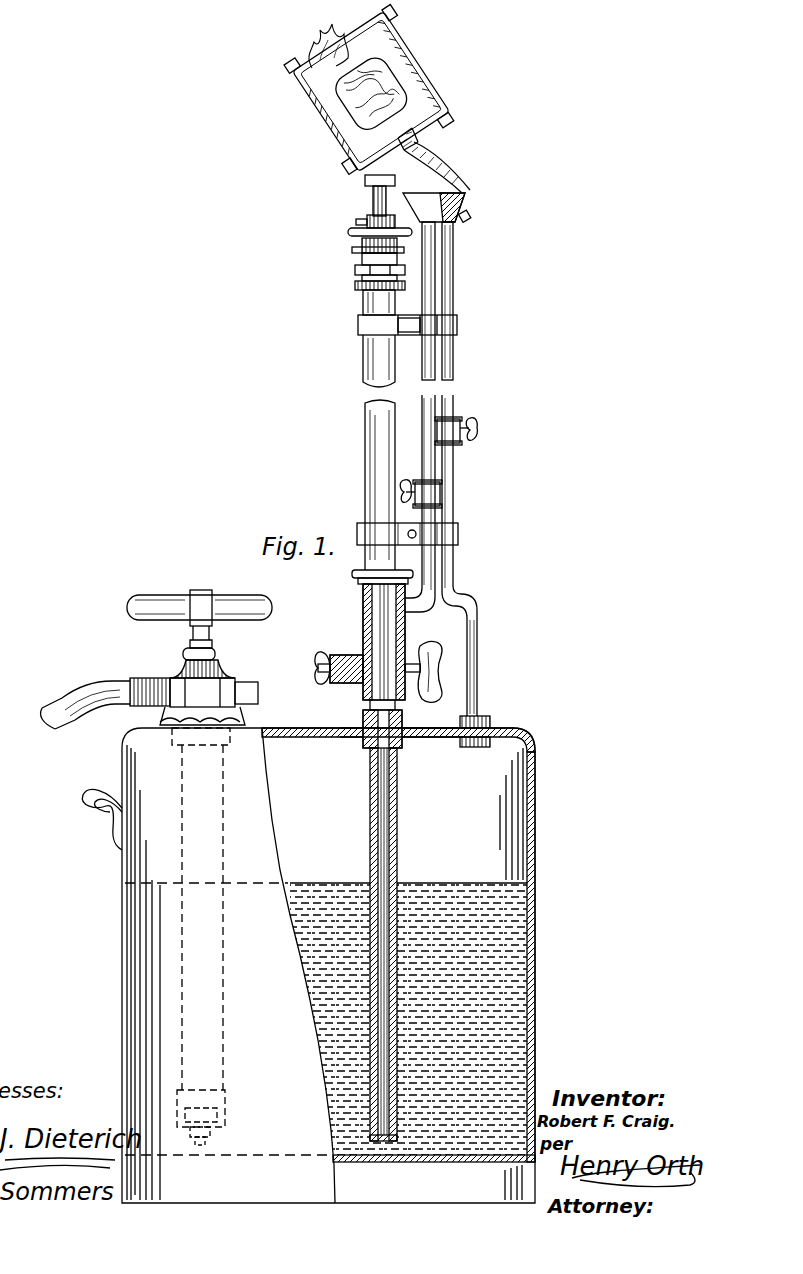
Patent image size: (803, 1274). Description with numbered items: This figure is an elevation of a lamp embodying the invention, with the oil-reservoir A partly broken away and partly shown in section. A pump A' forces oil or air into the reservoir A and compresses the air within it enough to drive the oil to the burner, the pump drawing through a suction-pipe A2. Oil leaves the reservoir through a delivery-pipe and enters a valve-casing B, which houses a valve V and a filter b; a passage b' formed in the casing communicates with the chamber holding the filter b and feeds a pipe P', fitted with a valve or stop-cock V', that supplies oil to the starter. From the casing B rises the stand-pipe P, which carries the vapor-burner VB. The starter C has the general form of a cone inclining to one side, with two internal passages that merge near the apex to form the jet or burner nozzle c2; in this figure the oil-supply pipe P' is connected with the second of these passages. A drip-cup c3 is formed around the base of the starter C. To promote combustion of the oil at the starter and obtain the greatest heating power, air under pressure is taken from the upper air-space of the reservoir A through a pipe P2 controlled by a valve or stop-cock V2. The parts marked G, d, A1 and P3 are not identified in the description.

The burner head G is at (408, 80).
The vapor-burner VB is at (424, 97).
The jet or burner nozzle c2 is at (422, 143).
The starter C is at (455, 197).
The drip-cup c3 is at (437, 207).
The filter b is at (394, 508).
The bracket block d is at (409, 325).
The oil-supply pipe P' is at (416, 409).
The air-supply pipe P2 is at (452, 376).
The stand-pipe P is at (399, 372).
The valve or stop-cock V2 is at (460, 440).
The valve or stop-cock V' is at (444, 494).
The valve-casing B is at (363, 623).
The passage b' is at (428, 611).
The valve V is at (325, 668).
The valve handle A1 is at (199, 622).
The suction-pipe A2 is at (100, 708).
The pump A' is at (215, 936).
The inner pipe P3 is at (377, 782).
The oil-reservoir A is at (323, 965).